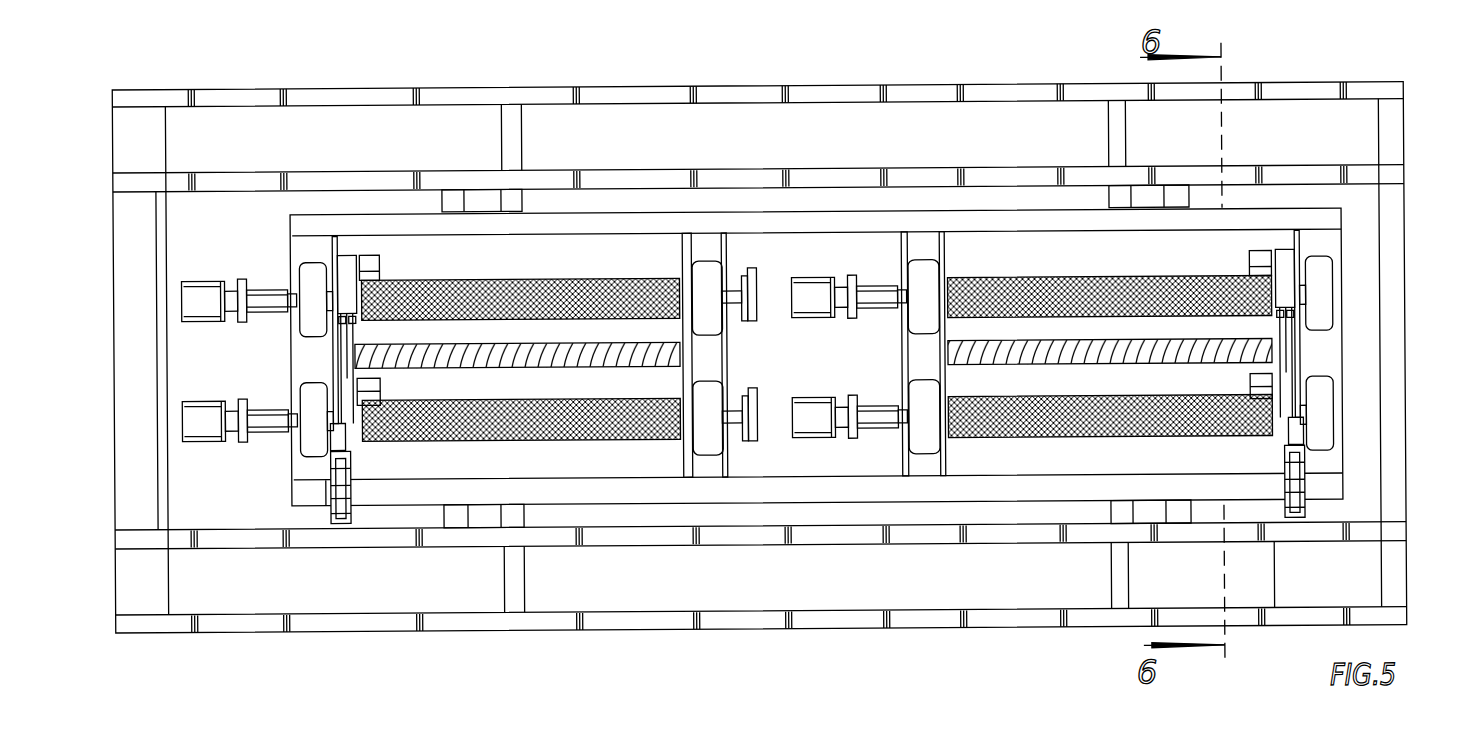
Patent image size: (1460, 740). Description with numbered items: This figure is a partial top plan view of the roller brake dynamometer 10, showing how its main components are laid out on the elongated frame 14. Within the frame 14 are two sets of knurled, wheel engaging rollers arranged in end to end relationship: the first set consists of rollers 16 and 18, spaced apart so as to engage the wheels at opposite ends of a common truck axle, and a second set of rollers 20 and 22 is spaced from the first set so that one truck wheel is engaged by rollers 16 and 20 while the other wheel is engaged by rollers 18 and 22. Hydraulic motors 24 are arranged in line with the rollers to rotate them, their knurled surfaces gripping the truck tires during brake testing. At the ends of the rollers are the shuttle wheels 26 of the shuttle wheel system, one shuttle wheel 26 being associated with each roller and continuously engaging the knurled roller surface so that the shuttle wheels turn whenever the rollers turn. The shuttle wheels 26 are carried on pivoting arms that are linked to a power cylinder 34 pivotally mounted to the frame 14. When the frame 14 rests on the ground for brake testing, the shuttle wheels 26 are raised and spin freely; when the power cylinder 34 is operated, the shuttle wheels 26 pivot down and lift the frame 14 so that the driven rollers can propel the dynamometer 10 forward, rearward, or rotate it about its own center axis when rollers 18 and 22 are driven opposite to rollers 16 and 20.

The roller brake dynamometer 10 is at (347, 64).
The elongated frame 14 is at (314, 92).
The first wheel engaging roller 16 is at (332, 341).
The second wheel engaging roller 18 is at (972, 329).
The roller of second set 20 is at (363, 409).
The roller of second set 22 is at (982, 402).
The hydraulic motors 24 is at (195, 416).
The shuttle wheel 26 is at (375, 259).
The power cylinder 34 is at (333, 494).